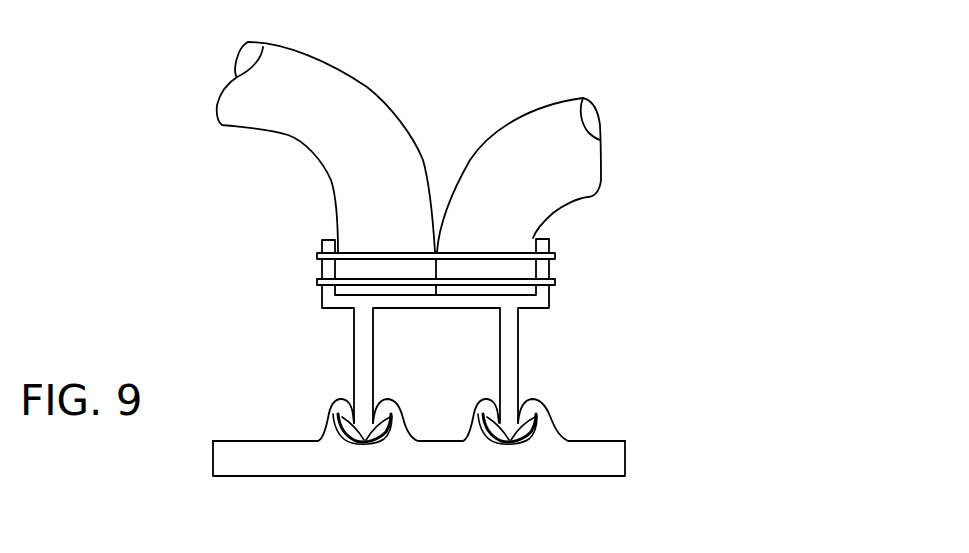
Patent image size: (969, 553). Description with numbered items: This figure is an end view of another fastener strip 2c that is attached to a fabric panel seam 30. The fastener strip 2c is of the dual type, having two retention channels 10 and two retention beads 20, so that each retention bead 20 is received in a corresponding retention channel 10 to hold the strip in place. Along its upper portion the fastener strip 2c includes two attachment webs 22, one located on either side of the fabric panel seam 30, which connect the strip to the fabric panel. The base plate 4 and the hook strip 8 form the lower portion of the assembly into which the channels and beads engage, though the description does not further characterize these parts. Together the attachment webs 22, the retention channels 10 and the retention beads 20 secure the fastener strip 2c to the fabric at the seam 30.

The fastener strip 2c is at (226, 290).
The fabric panel seam 30 is at (436, 228).
The attachment web 22 is at (320, 243).
The base plate 4 is at (613, 463).
The hook strip 8 is at (324, 410).
The retention channel 10 is at (388, 435).
The retention bead 20 is at (363, 435).